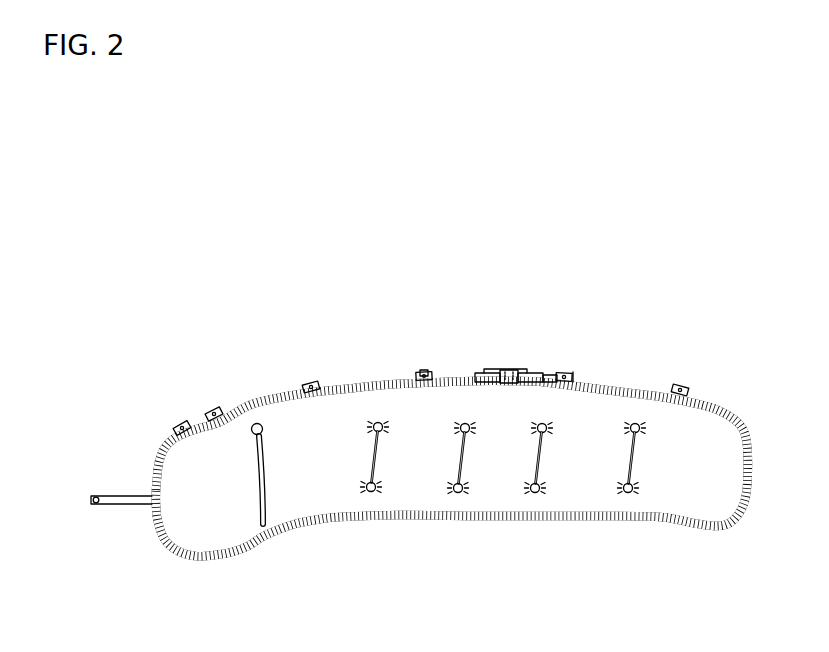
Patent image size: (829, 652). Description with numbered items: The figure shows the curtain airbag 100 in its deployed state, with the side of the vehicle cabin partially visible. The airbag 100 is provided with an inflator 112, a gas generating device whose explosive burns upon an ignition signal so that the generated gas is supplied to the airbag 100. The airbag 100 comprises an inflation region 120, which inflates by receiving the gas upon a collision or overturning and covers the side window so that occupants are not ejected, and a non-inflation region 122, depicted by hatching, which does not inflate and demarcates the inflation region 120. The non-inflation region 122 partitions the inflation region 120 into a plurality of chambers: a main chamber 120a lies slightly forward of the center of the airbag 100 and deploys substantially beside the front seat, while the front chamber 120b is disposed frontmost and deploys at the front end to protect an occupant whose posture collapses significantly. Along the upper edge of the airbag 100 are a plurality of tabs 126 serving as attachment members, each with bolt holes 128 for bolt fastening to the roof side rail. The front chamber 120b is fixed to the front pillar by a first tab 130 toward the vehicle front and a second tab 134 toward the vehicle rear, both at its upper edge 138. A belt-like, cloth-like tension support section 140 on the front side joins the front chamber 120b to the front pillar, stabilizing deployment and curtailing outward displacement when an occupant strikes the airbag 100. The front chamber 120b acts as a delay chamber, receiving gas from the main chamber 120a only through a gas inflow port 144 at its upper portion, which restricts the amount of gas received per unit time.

The airbag 100 is at (397, 362).
The inflator 112 is at (542, 371).
The inflation region 120 is at (613, 414).
The main chamber 120a is at (316, 489).
The front chamber 120b is at (193, 514).
The non-inflation region 122 is at (378, 458).
The tabs 126 is at (320, 381).
The bolt holes 128 is at (304, 383).
The first tab 130 is at (176, 428).
The second tab 134 is at (207, 412).
The upper edge of the front chamber 138 is at (231, 398).
The tension support section 140 is at (117, 494).
The gas inflow port 144 is at (246, 424).